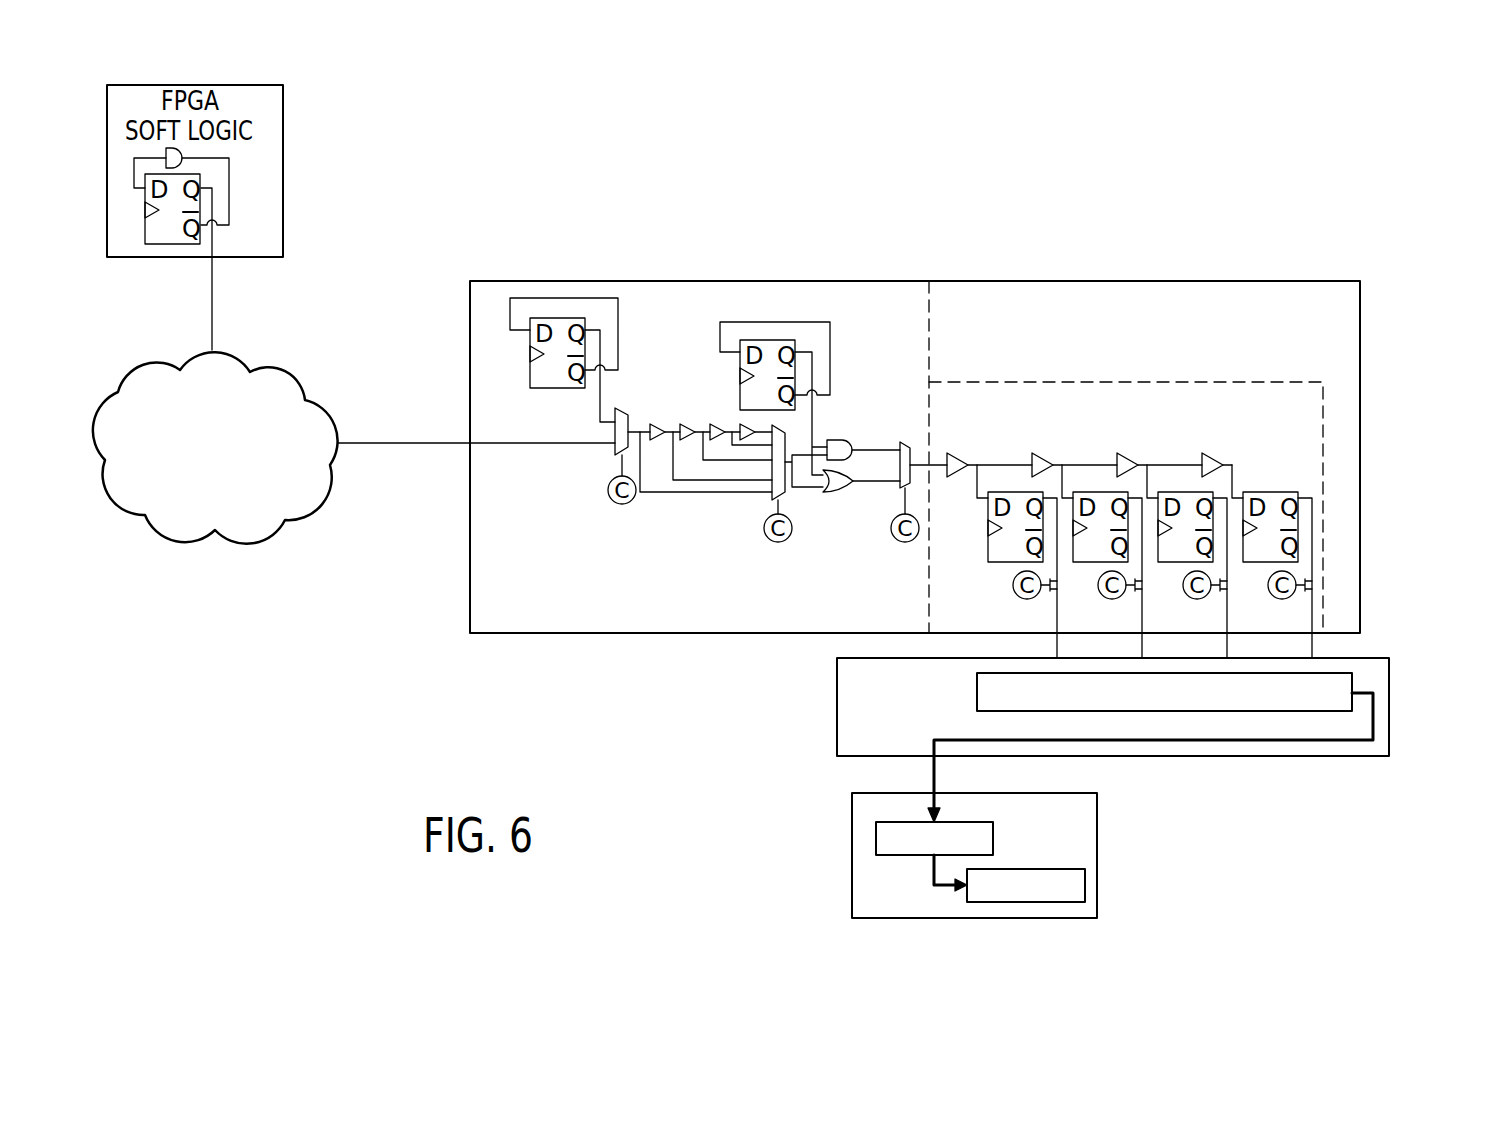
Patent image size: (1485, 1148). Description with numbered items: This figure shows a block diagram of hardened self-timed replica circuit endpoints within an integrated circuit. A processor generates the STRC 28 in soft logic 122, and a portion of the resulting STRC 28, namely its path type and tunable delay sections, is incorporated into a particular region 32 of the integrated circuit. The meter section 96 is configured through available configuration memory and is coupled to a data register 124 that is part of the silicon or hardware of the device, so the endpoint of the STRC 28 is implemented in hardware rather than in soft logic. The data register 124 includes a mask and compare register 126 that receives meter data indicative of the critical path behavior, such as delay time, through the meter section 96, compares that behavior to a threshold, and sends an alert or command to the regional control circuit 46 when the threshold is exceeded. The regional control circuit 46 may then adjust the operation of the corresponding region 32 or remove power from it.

The STRC 28 is at (1124, 316).
The region 32 is at (708, 633).
The regional control circuit 46 is at (1097, 853).
The meter section 96 is at (1165, 382).
The soft logic 122 is at (290, 353).
The data register 124 is at (1153, 740).
The mask and compare register 126 is at (1270, 711).